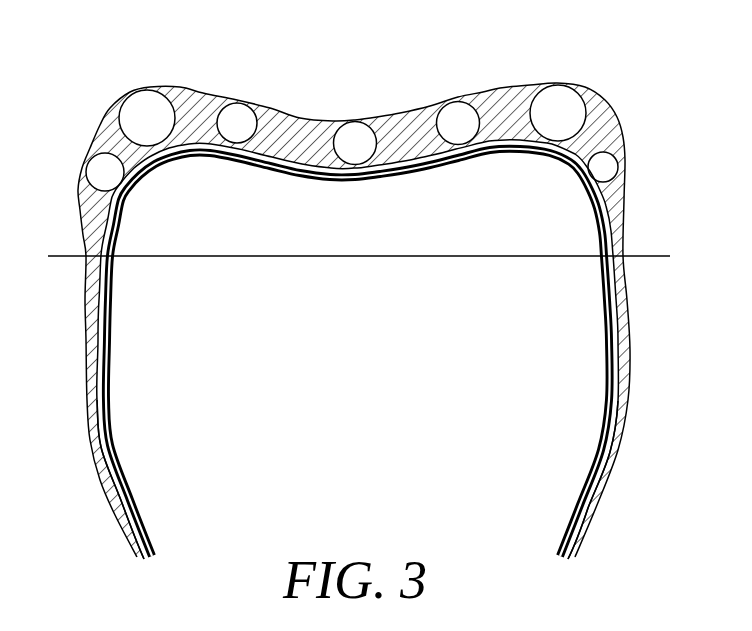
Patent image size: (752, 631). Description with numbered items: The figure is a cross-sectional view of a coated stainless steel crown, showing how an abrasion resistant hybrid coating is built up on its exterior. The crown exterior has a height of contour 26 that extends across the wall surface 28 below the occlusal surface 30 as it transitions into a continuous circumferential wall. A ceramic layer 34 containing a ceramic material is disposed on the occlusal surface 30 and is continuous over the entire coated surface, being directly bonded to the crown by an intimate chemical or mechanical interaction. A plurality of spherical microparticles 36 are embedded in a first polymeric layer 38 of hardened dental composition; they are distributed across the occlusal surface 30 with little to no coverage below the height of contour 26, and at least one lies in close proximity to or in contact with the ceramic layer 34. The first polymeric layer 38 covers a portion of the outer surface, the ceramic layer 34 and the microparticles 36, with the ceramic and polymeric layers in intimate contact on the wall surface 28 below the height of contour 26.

The height of contour 26 is at (377, 258).
The wall surface 28 is at (102, 393).
The occlusal surface 30 is at (402, 164).
The ceramic layer 34 is at (612, 365).
The spherical microparticles 36 is at (233, 132).
The first polymeric layer 38 is at (290, 142).